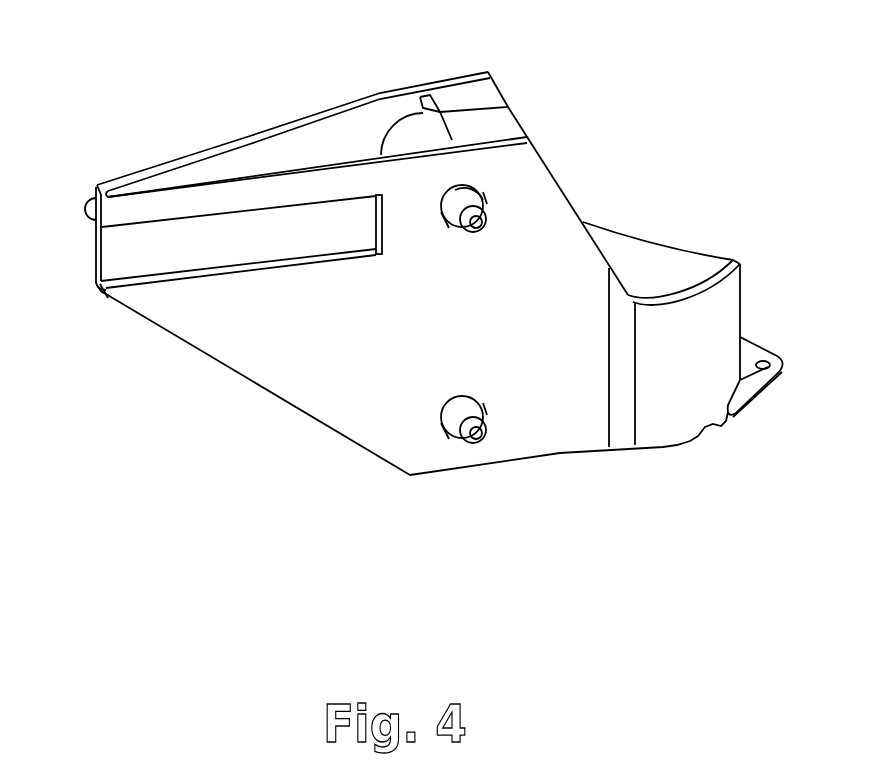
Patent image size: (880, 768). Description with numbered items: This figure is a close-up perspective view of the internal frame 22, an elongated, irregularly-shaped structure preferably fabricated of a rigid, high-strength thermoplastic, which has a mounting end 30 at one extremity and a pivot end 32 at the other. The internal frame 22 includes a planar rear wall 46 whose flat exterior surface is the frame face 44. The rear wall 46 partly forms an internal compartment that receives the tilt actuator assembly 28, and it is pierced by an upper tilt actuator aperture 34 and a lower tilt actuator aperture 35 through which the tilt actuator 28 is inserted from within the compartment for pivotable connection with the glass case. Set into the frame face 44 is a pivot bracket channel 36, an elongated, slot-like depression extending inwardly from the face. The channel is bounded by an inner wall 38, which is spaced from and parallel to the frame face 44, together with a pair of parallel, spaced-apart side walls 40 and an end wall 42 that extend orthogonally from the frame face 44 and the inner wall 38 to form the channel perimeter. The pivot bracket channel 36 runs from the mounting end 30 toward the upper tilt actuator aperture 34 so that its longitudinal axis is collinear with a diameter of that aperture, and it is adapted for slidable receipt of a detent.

The internal frame 22 is at (746, 255).
The tilt actuator assembly 28 is at (473, 190).
The mounting end 30 is at (168, 328).
The pivot end 32 is at (764, 400).
The upper tilt actuator aperture 34 is at (450, 188).
The lower tilt actuator aperture 35 is at (440, 428).
The pivot bracket channel 36 is at (110, 248).
The inner wall 38 is at (308, 243).
The side walls 40 is at (181, 215).
The end wall 42 is at (378, 250).
The frame face 44 is at (216, 332).
The rear wall 46 is at (523, 190).